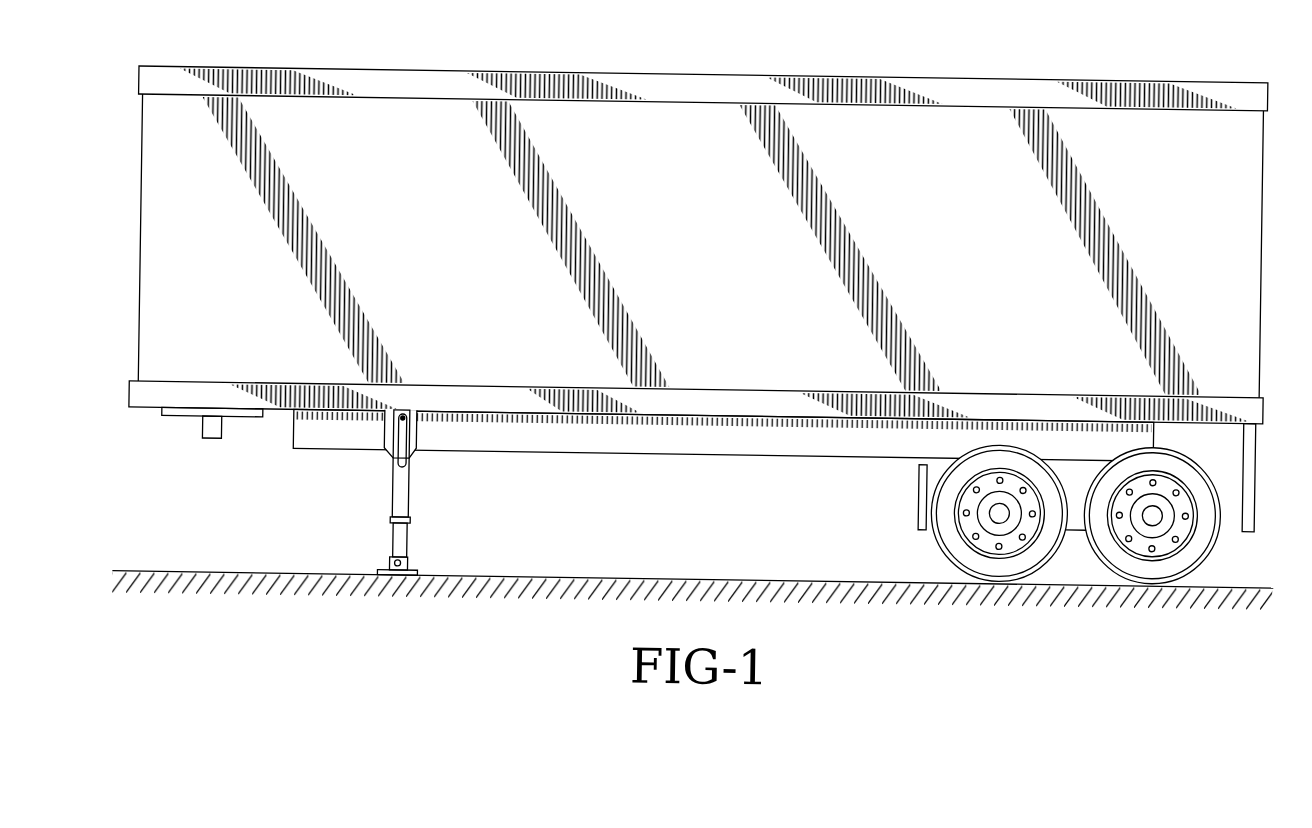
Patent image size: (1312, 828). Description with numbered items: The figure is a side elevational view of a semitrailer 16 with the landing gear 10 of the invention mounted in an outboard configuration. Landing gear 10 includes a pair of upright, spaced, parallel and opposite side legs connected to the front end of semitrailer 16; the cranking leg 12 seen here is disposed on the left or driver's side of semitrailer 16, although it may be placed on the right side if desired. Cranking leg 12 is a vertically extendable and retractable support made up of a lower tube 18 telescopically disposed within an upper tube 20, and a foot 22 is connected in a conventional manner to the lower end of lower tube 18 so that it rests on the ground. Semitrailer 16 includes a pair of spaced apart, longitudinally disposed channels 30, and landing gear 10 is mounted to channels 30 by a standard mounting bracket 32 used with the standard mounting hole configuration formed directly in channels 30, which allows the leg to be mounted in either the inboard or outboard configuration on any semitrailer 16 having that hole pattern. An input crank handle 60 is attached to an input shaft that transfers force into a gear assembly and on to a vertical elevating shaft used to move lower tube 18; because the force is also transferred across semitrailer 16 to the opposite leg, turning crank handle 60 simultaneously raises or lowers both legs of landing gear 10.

The landing gear 10 is at (368, 499).
The cranking leg 12 is at (411, 493).
The semitrailer 16 is at (960, 78).
The lower tube 18 is at (415, 541).
The upper tube 20 is at (416, 474).
The foot 22 is at (393, 565).
The channel 30 is at (605, 440).
The standard mounting bracket 32 is at (424, 428).
The input crank handle 60 is at (399, 460).